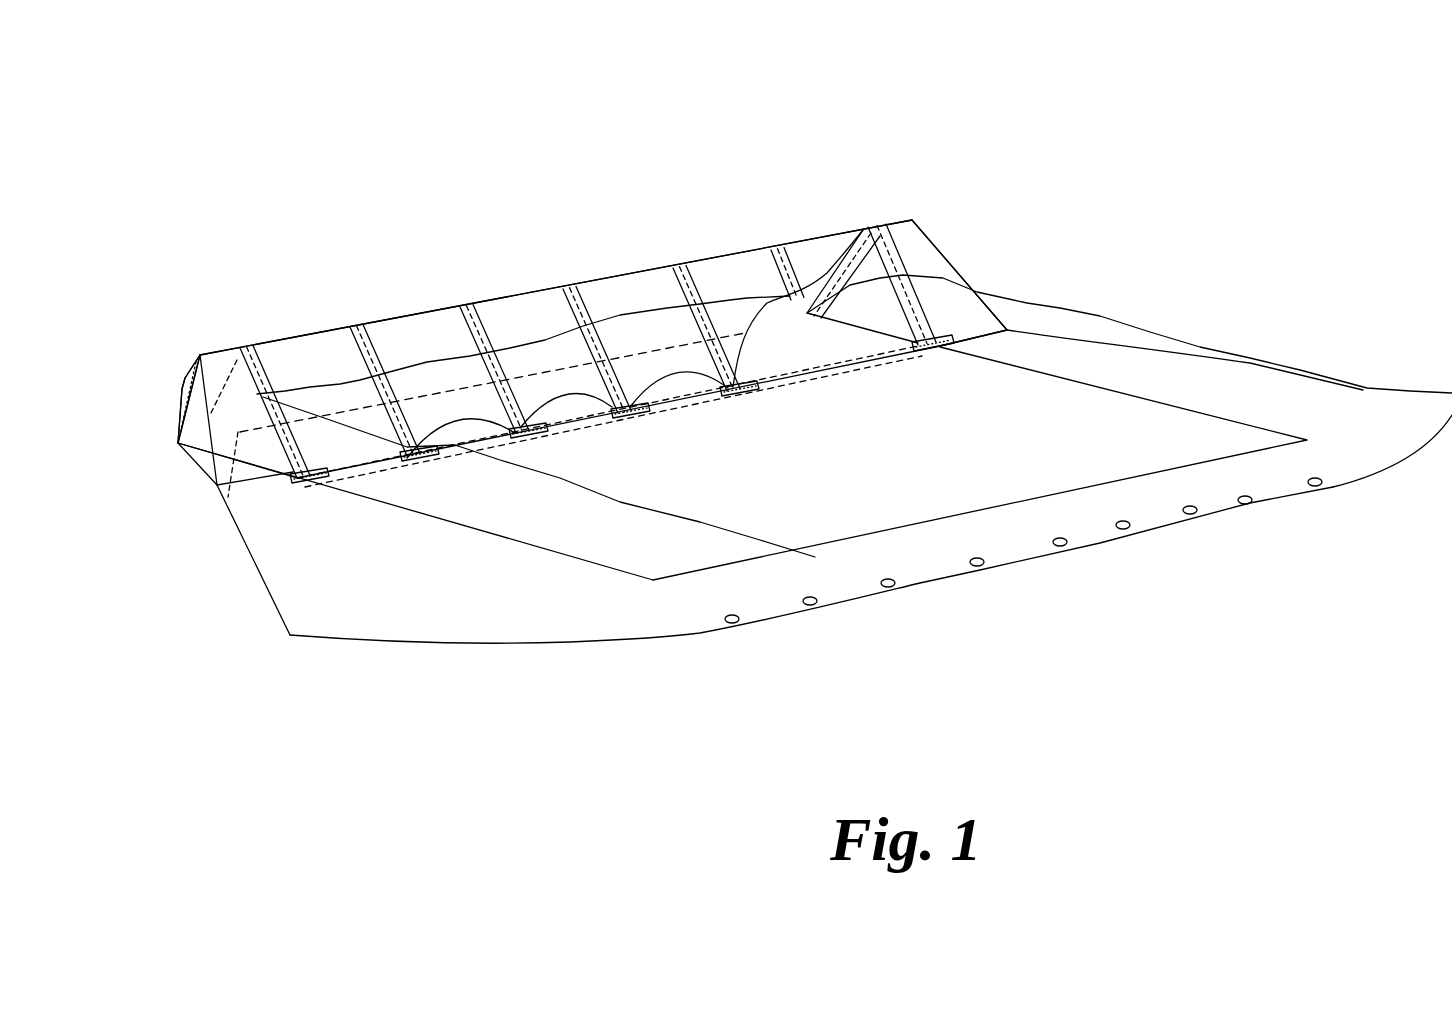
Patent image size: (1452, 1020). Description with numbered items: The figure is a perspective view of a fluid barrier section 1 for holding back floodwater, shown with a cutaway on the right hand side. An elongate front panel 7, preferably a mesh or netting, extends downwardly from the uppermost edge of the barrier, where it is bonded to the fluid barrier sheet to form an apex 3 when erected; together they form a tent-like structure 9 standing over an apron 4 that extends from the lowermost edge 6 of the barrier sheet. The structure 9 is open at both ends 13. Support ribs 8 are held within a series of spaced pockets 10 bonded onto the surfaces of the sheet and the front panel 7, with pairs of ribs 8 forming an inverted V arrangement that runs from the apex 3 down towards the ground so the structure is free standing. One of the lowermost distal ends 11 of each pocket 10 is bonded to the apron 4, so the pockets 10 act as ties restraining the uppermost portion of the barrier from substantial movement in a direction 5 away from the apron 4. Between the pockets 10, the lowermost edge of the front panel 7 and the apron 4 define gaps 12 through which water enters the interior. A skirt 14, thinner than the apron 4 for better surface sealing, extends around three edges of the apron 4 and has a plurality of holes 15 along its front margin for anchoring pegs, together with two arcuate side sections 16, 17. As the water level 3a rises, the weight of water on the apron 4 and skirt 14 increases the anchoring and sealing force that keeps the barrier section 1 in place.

The fluid barrier section 1 is at (632, 153).
The apex 3 is at (744, 252).
The level 3a is at (1095, 315).
The apron 4 is at (1023, 395).
The direction 5 is at (134, 314).
The lowermost edge 6 is at (222, 508).
The front panel 7 is at (297, 372).
The support ribs 8 is at (545, 290).
The tent-like structure 9 is at (709, 252).
The pockets 10 is at (437, 303).
The lowermost distal ends 11 is at (317, 480).
The gaps 12 is at (462, 440).
The ends 13 is at (930, 228).
The skirt 14 is at (1098, 547).
The holes 15 is at (886, 587).
The arcuate side section 16 is at (1222, 393).
The arcuate side section 17 is at (327, 605).